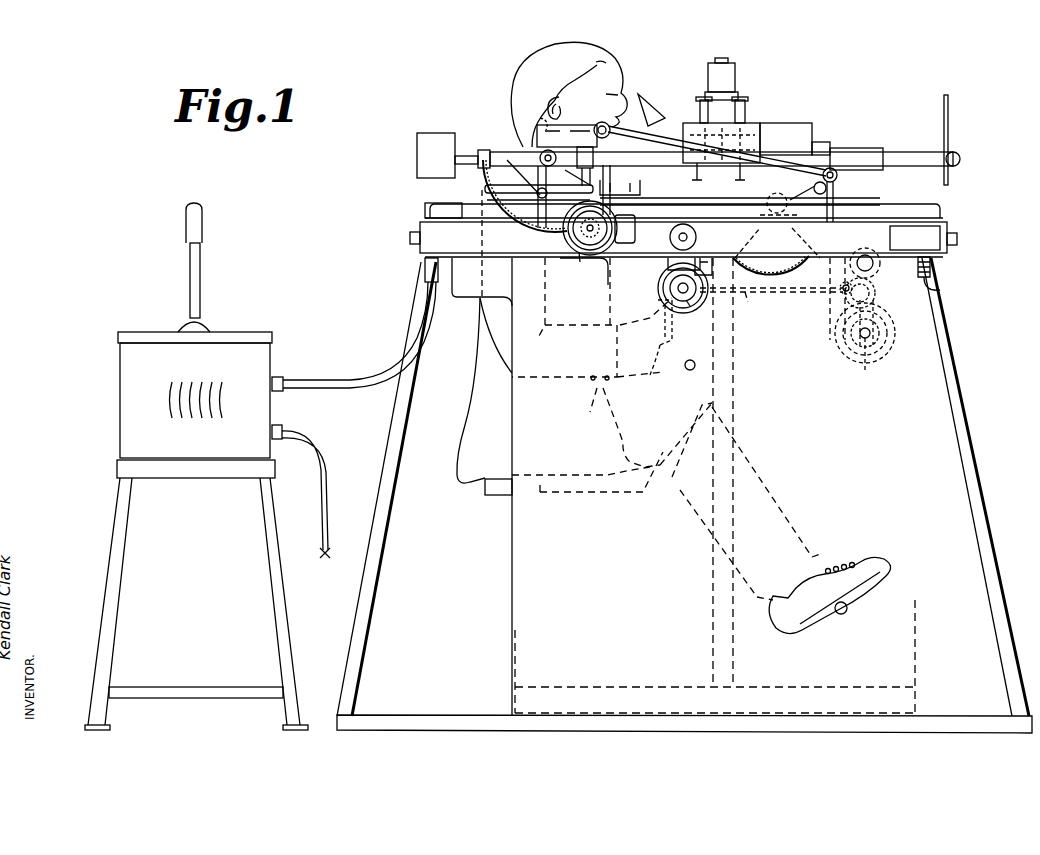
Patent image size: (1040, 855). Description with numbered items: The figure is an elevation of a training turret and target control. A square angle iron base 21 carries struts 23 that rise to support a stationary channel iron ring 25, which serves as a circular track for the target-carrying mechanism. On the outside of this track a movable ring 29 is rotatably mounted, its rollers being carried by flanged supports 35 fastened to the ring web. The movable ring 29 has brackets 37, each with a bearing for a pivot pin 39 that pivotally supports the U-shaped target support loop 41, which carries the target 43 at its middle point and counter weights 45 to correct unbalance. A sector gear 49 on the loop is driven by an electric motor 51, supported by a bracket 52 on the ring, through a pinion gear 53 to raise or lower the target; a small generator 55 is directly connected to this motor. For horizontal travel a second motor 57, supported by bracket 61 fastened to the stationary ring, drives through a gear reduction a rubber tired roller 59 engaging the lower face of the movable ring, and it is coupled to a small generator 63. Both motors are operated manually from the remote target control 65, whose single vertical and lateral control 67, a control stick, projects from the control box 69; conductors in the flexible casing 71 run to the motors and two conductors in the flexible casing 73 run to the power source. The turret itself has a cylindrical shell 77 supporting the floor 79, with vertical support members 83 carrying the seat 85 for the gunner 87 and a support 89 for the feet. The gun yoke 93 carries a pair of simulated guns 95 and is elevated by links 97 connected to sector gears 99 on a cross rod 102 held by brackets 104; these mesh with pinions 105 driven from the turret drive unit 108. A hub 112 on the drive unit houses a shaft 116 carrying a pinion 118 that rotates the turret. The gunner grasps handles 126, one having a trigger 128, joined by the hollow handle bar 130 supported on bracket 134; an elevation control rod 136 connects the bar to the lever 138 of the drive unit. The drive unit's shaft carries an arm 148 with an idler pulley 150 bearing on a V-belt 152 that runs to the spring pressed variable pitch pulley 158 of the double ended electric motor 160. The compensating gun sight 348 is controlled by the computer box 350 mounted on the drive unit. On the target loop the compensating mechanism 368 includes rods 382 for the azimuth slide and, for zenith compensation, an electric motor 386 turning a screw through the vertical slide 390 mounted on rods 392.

The square angle iron base 21 is at (398, 725).
The struts 23 is at (992, 548).
The outer stationary ring 25 is at (378, 552).
The movable ring 29 is at (956, 222).
The flanged supports 35 is at (410, 239).
The brackets 37 is at (525, 166).
The pivot pin 39 is at (535, 150).
The target support loop 41 is at (922, 168).
The target 43 is at (949, 122).
The counter weights 45 is at (418, 152).
The sector gear 49 is at (482, 186).
The electric motor 51 is at (560, 233).
The bracket 52 is at (634, 238).
The pinion gear 53 is at (578, 260).
The small generator 55 is at (604, 282).
The second motor 57 is at (660, 282).
The rubber tired roller 59 is at (666, 264).
The bracket 61 is at (704, 262).
The small generator 63 is at (671, 292).
The remote target control 65 is at (275, 353).
The vertical and lateral control 67 is at (200, 252).
The control box 69 is at (120, 358).
The flexible casing 71 is at (368, 378).
The flexible casing 73 is at (328, 447).
The cylindrical shell 77 is at (525, 552).
The floor 79 is at (570, 716).
The vertical support members 83 is at (736, 338).
The seat 85 is at (503, 495).
The gunner 87 is at (465, 424).
The support 89 is at (847, 613).
The gun yoke 93 is at (668, 192).
The simulated guns 95 is at (780, 130).
The links 97 is at (790, 172).
The sector gears 99 is at (796, 252).
The cross rod 102 is at (835, 197).
The brackets 104 is at (767, 203).
The pinions 105 is at (860, 258).
The turret drive unit 108 is at (874, 305).
The hub 112 is at (872, 296).
The shaft 116 is at (916, 252).
The pinion 118 is at (940, 290).
The handles 126 is at (656, 406).
The trigger 128 is at (665, 380).
The handle bar 130 is at (613, 310).
The bracket 134 is at (672, 342).
The elevation control rod 136 is at (748, 298).
The lever 138 is at (840, 288).
The arm 148 is at (840, 310).
The idler pulley 150 is at (842, 320).
The V-belt 152 is at (850, 333).
The variable pitch pulley 158 is at (862, 370).
The double ended electric motor 160 is at (842, 348).
The compensating gun sight 348 is at (657, 94).
The computer box 350 is at (892, 212).
The compensating mechanism 368 is at (745, 100).
The rods 382 is at (752, 120).
The electric motor 386 is at (740, 52).
The vertical slide 390 is at (704, 94).
The rods 392 is at (695, 112).